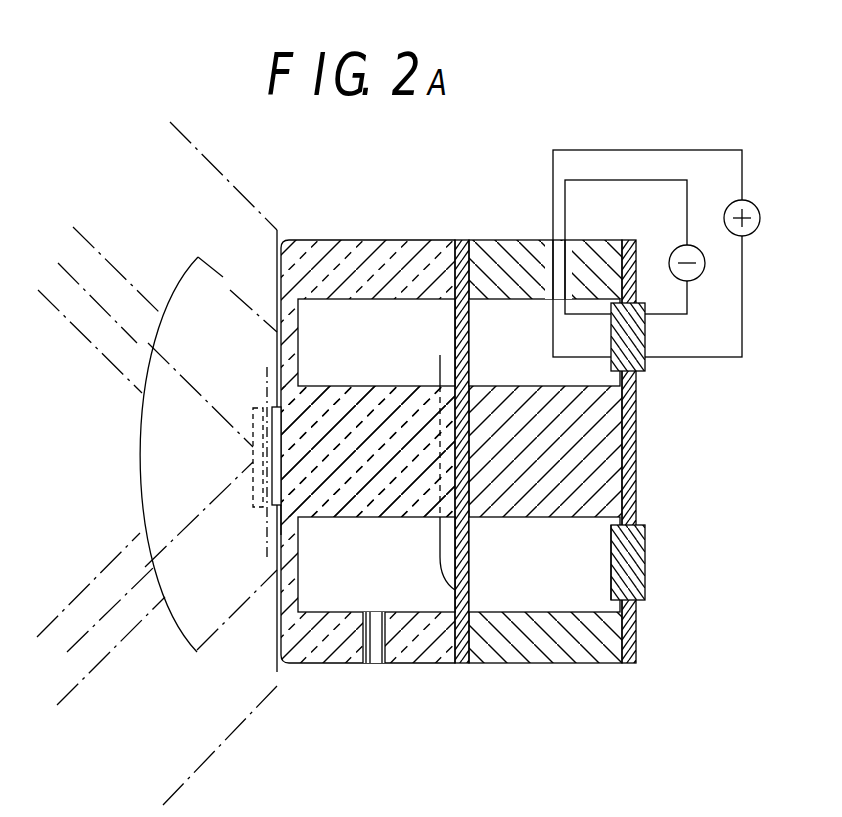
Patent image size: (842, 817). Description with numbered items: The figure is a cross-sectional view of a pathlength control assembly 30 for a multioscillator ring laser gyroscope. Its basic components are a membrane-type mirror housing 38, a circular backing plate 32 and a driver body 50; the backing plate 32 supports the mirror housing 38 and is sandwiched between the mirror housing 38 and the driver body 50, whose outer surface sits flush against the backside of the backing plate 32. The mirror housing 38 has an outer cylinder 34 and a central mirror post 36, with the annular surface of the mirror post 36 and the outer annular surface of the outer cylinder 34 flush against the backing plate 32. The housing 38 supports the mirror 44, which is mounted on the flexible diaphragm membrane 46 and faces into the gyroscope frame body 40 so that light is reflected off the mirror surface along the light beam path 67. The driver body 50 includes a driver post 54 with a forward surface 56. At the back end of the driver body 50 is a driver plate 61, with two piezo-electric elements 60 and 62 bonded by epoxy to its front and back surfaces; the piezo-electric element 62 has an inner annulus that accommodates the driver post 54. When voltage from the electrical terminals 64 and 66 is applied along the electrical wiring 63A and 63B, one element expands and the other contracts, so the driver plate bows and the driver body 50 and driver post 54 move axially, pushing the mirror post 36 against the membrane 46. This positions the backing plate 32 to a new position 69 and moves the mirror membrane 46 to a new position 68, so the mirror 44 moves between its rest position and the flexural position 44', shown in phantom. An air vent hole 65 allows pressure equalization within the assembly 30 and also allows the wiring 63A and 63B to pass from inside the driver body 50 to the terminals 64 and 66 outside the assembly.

The path length controller mirror assembly 30 is at (548, 398).
The backing plate 32 is at (462, 240).
The outer cylinder 34 is at (353, 241).
The central mirror post 36 is at (370, 478).
The membrane-type mirror housing 38 is at (335, 648).
The gyroscope frame body 40 is at (190, 776).
The mirror 44 is at (168, 456).
The flexural position of the mirror 44' is at (164, 457).
The diaphragm membrane 46 is at (281, 520).
The driver body 50 is at (545, 663).
The driver post 54 is at (510, 385).
The forward surface 56 is at (478, 487).
The piezo-electric element 60 is at (648, 362).
The driver plate 61 is at (633, 663).
The piezo-electric element 62 is at (612, 578).
The electrical wiring 63A is at (590, 150).
The electrical wiring 63B is at (644, 180).
The electrical terminal 64 is at (692, 282).
The air vent hole 65 is at (568, 240).
The electrical terminal 66 is at (760, 219).
The light beam path 67 is at (87, 633).
The new position of the mirror membrane 68 is at (267, 367).
The new position of the backing plate 69 is at (440, 353).